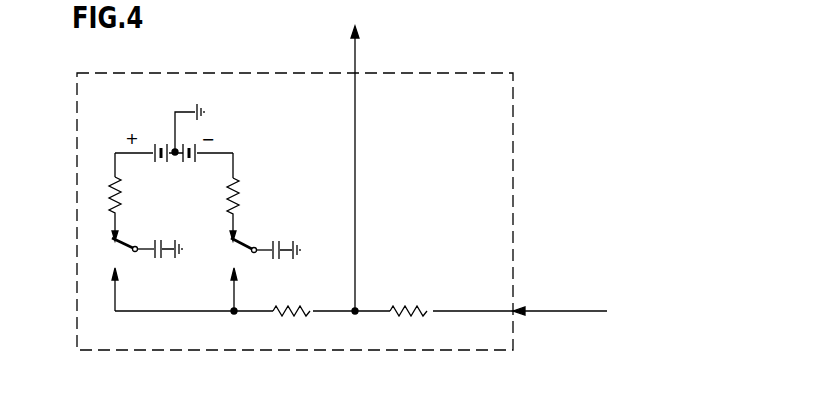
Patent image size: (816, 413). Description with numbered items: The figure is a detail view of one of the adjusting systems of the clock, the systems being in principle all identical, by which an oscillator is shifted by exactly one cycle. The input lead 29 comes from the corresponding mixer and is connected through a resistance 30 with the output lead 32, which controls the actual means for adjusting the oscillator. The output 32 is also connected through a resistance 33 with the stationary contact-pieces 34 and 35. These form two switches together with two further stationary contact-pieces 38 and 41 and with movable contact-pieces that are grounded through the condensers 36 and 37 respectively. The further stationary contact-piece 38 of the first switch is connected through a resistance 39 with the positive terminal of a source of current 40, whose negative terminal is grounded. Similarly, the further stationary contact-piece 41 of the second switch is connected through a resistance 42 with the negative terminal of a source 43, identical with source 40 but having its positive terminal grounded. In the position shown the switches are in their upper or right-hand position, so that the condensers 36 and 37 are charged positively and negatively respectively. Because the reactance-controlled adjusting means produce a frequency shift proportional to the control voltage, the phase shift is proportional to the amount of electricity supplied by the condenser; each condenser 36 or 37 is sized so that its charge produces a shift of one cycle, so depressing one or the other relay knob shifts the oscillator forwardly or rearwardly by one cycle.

The input lead 29 is at (565, 312).
The resistance 30 is at (430, 316).
The output lead 32 is at (355, 58).
The resistance 33 is at (312, 316).
The stationary contact-piece 34 is at (115, 289).
The stationary contact-piece 35 is at (234, 289).
The condenser 36 is at (160, 258).
The condenser 37 is at (279, 259).
The further stationary contact-piece 38 is at (113, 238).
The resistance 39 is at (112, 180).
The source of current 40 is at (158, 161).
The further stationary contact-piece 41 is at (237, 239).
The resistance 42 is at (240, 211).
The source 43 is at (197, 161).